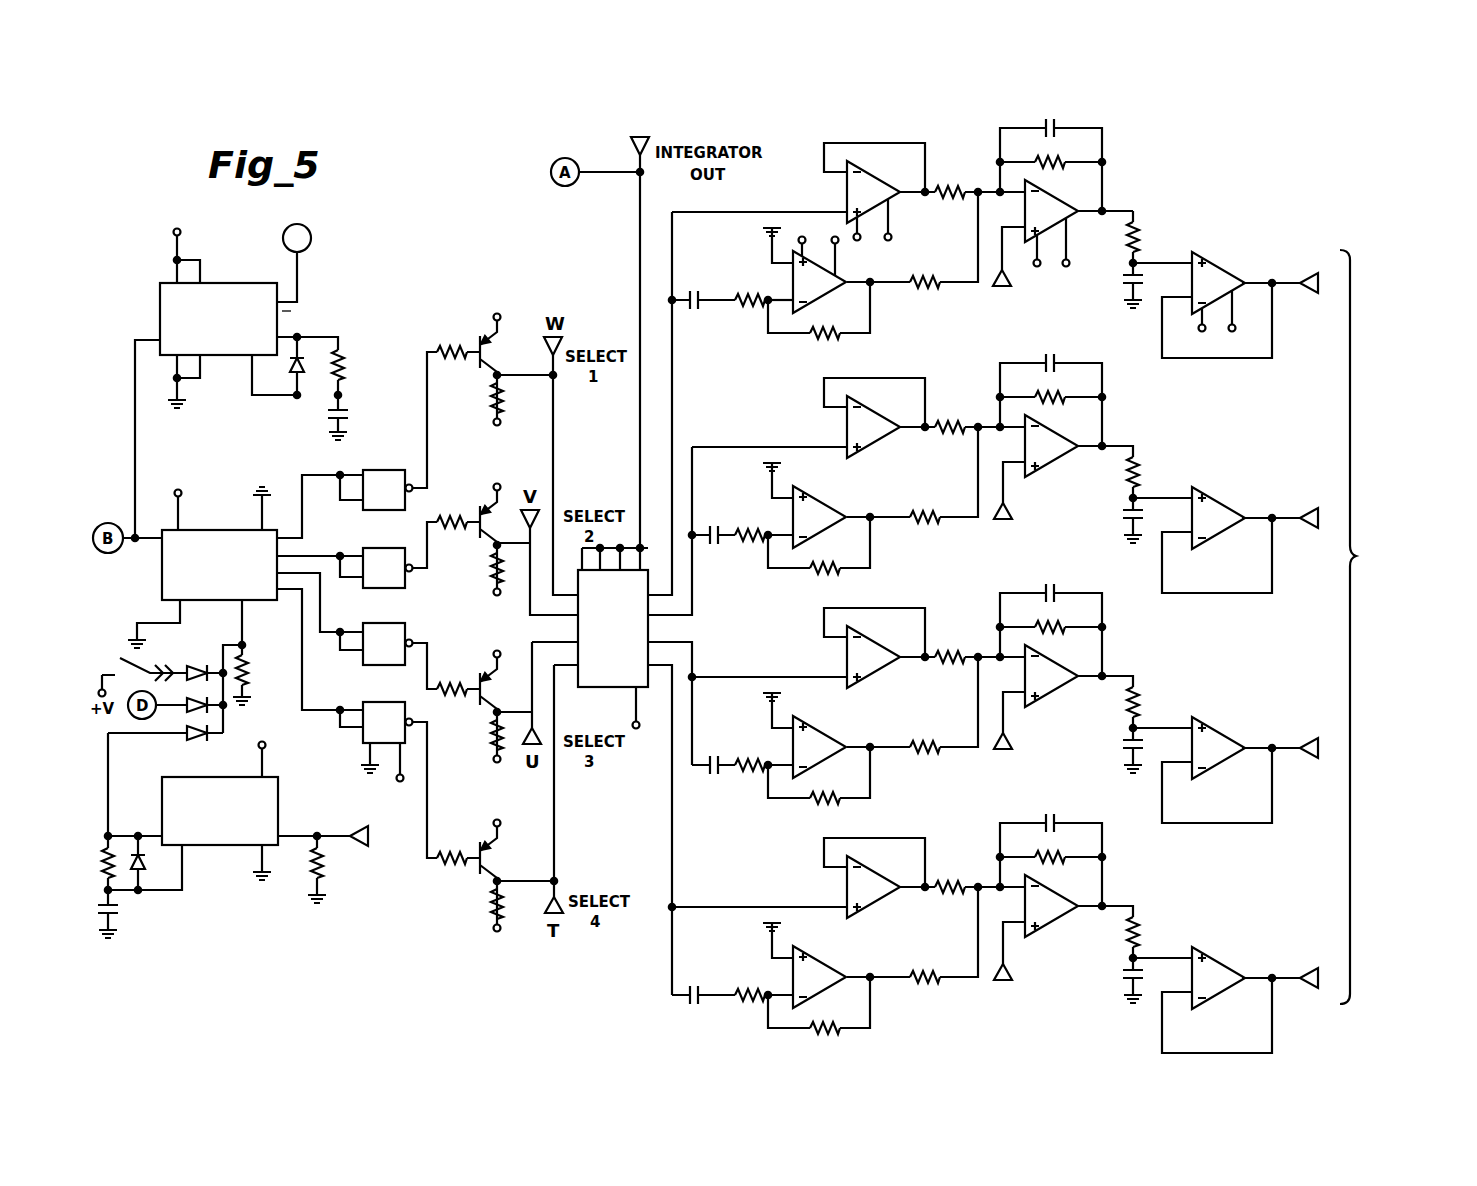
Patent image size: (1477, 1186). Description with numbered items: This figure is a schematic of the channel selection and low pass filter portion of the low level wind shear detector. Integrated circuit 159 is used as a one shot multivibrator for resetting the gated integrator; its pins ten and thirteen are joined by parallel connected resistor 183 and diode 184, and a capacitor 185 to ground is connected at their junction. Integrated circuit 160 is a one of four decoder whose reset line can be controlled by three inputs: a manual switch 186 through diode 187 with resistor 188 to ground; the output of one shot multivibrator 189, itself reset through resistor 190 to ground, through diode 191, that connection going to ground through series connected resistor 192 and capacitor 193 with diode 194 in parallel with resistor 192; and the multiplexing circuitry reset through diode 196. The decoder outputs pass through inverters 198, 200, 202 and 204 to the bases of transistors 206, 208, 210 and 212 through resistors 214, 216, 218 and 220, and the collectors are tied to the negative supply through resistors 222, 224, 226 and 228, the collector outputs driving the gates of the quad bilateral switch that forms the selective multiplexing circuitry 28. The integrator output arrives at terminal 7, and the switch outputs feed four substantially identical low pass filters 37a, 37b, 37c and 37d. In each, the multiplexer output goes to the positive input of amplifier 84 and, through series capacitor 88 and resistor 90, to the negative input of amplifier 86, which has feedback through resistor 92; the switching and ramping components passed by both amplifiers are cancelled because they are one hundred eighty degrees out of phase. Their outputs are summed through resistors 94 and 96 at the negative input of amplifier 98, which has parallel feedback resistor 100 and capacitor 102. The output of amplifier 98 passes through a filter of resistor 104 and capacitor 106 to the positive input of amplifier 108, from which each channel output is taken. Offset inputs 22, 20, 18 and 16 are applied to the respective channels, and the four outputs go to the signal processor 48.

The integrated circuit 159 is at (232, 283).
The integrated circuit 160 is at (252, 504).
The resistor 183 is at (342, 362).
The diode 184 is at (296, 370).
The capacitor 185 is at (348, 418).
The manual switch 186 is at (138, 657).
The diode 187 is at (196, 663).
The resistor 188 is at (247, 668).
The one shot multivibrator 189 is at (222, 845).
The resistor 190 is at (322, 864).
The diode 191 is at (196, 741).
The resistor 192 is at (112, 864).
The capacitor 193 is at (112, 916).
The diode 194 is at (142, 868).
The diode 196 is at (190, 712).
The inverter 198 is at (388, 450).
The inverter 200 is at (388, 528).
The inverter 202 is at (388, 603).
The inverter 204 is at (388, 682).
The transistor 206 is at (470, 360).
The transistor 208 is at (470, 530).
The transistor 210 is at (470, 697).
The transistor 212 is at (470, 866).
The resistor 214 is at (441, 346).
The resistor 216 is at (464, 518).
The resistor 218 is at (470, 686).
The resistor 220 is at (472, 854).
The resistor 222 is at (490, 400).
The resistor 224 is at (490, 570).
The resistor 226 is at (490, 737).
The resistor 228 is at (490, 906).
The integrator output terminal 7 is at (640, 135).
The selective multiplexing circuitry 28 is at (606, 687).
The low pass filter 37a is at (993, 232).
The low pass filter 37b is at (1003, 473).
The low pass filter 37c is at (1003, 703).
The low pass filter 37d is at (993, 933).
The amplifier 84 is at (883, 156).
The amplifier 86 is at (828, 300).
The capacitor 88 is at (702, 290).
The resistor 90 is at (754, 294).
The resistor 92 is at (820, 340).
The resistor 94 is at (948, 174).
The resistor 96 is at (922, 288).
The amplifier 98 is at (1064, 176).
The resistor 100 is at (1052, 160).
The capacitor 102 is at (1040, 124).
The resistor 104 is at (1139, 236).
The capacitor 106 is at (1128, 272).
The amplifier 108 is at (1222, 262).
The offset 1 input 22 is at (1002, 291).
The offset 2 input 20 is at (1002, 524).
The offset 3 input 18 is at (1002, 754).
The offset 4 input 16 is at (1002, 985).
The signal processor 48 is at (1402, 627).